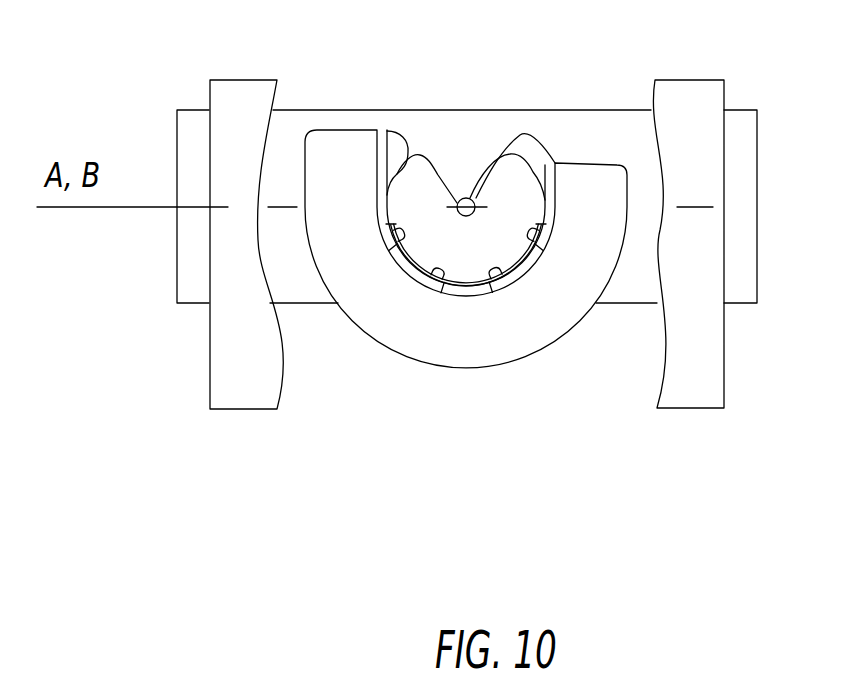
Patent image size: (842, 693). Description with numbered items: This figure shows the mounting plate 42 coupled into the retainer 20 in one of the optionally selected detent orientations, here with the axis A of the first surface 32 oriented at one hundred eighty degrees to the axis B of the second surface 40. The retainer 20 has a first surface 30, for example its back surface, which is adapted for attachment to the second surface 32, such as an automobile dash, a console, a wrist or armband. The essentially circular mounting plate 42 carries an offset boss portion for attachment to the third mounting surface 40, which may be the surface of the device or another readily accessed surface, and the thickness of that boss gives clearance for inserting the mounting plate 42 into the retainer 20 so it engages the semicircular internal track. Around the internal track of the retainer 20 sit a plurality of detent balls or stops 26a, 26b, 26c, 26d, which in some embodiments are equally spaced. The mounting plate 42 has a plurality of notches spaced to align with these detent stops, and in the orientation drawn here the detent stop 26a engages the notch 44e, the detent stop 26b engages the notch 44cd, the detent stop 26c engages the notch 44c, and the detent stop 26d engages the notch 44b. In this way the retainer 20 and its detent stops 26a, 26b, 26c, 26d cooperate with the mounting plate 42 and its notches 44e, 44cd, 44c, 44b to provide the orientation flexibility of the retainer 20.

The retainer 20 is at (337, 128).
The first surface 30 is at (359, 180).
The second surface 32 is at (257, 141).
The third mounting surface 40 is at (305, 282).
The mounting plate 42 is at (442, 172).
The detent stop 26a is at (275, 356).
The detent stop 26b is at (395, 380).
The detent stop 26c is at (455, 352).
The detent stop 26d is at (589, 319).
The notch 44e is at (395, 235).
The notch 44cd is at (437, 283).
The notch 44c is at (497, 280).
The notch 44b is at (540, 237).